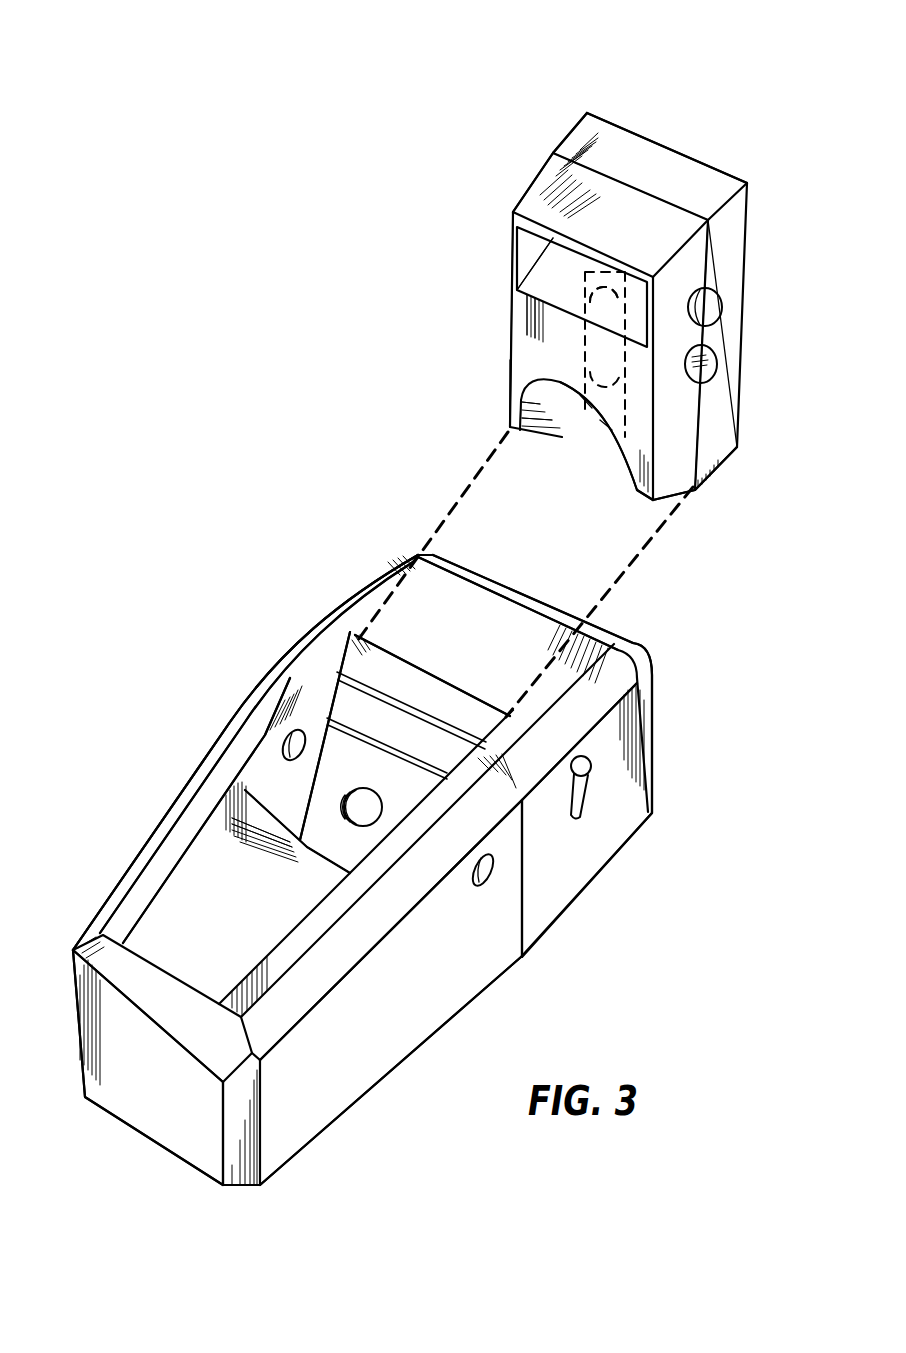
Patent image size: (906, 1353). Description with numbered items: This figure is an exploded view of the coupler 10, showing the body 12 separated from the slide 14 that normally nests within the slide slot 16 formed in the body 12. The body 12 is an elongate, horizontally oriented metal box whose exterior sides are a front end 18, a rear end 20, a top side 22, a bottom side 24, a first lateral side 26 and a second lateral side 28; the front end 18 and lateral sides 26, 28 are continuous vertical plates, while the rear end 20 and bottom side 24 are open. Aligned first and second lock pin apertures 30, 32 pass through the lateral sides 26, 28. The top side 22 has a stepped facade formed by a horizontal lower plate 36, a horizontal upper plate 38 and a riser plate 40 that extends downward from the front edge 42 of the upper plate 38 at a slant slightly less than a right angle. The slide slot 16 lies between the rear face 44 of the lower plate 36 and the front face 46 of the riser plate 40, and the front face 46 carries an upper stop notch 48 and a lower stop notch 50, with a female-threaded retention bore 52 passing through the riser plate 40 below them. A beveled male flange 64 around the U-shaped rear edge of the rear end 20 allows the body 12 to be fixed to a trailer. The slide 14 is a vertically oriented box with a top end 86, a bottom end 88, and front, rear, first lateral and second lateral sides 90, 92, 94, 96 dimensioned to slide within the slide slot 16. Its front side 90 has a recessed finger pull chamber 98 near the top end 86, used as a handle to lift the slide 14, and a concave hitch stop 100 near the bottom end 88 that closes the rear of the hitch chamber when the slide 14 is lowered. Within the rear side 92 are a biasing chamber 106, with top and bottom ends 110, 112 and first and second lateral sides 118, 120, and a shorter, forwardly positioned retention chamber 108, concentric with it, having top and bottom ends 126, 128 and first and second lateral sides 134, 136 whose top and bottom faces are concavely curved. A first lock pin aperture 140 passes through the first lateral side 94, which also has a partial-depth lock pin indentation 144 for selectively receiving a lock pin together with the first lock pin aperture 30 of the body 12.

The coupler 10 is at (90, 653).
The body 12 is at (340, 1095).
The slide 14 is at (637, 147).
The slide slot 16 is at (273, 670).
The front end 18 is at (132, 1098).
The rear end 20 is at (633, 643).
The top side 22 is at (408, 556).
The bottom side 24 is at (497, 990).
The first lateral side 26 is at (445, 1003).
The second lateral side 28 is at (137, 850).
The first lock pin aperture 30 is at (493, 873).
The second lock pin aperture 32 is at (280, 740).
The lower plate 36 is at (210, 880).
The upper plate 38 is at (420, 548).
The riser plate 40 is at (352, 658).
The front edge 42 is at (400, 558).
The rear face 44 is at (280, 830).
The front face 46 is at (338, 842).
The upper stop notch 48 is at (343, 660).
The lower stop notch 50 is at (318, 660).
The retention bore 52 is at (378, 803).
The beveled male flange 64 is at (533, 602).
The top end 86 is at (577, 137).
The bottom end 88 is at (713, 477).
The front side 90 is at (517, 340).
The rear side 92 is at (610, 120).
The first lateral side 94 is at (724, 264).
The second lateral side 96 is at (510, 368).
The finger pull chamber 98 is at (545, 274).
The hitch stop 100 is at (565, 415).
The biasing chamber 106 is at (587, 408).
The retention chamber 108 is at (625, 318).
The top end 110 is at (588, 270).
The bottom end 112 is at (602, 428).
The first lateral side 118 is at (625, 393).
The second lateral side 120 is at (508, 420).
The top end 126 is at (612, 298).
The bottom end 128 is at (653, 498).
The first lateral side 134 is at (735, 242).
The second lateral side 136 is at (528, 318).
The first lock pin aperture 140 is at (723, 310).
The lock pin indentation 144 is at (717, 367).